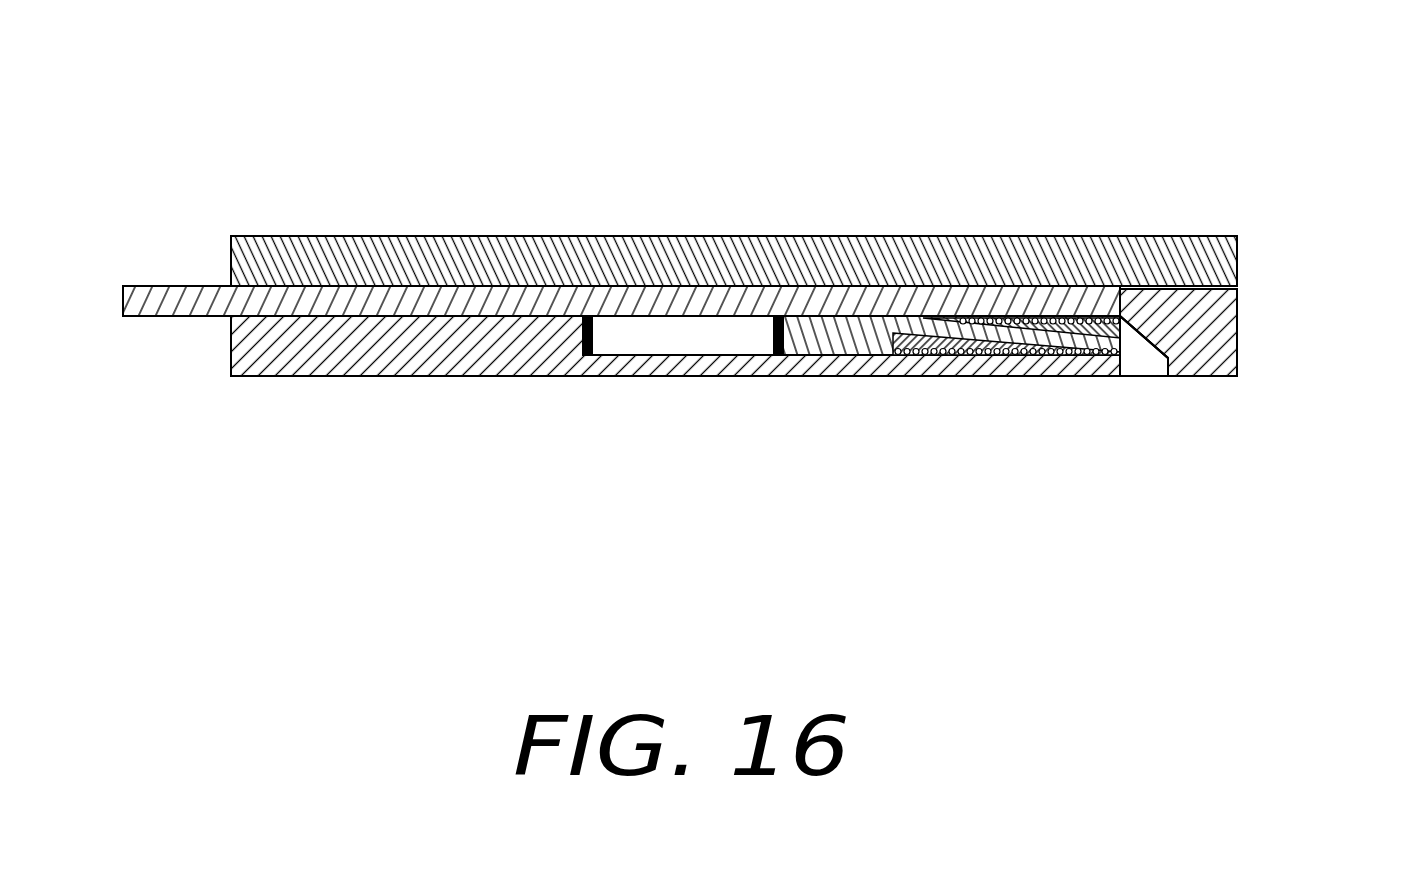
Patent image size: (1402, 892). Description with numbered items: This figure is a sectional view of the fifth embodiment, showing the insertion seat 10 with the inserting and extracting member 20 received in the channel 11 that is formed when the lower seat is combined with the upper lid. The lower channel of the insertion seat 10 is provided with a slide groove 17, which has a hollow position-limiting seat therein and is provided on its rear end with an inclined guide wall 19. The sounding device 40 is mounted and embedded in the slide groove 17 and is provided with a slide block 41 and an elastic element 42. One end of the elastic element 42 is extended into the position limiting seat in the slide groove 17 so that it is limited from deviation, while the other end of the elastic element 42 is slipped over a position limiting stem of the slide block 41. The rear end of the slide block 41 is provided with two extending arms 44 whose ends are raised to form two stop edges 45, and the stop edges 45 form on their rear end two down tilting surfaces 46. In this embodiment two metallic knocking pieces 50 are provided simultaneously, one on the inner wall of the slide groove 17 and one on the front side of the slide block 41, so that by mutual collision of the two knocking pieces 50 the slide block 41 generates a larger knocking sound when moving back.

The insertion seat 10 is at (810, 280).
The channel 11 is at (340, 318).
The slide groove 17 is at (682, 333).
The inclined guide wall 19 is at (1160, 343).
The inserting and extracting member 20 is at (160, 285).
The sounding device 40 is at (999, 354).
The slide block 41 is at (822, 337).
The elastic element 42 is at (957, 350).
The extending arms 44 is at (971, 318).
The stop edges 45 is at (1122, 345).
The down tilting surfaces 46 is at (1132, 335).
The metallic knocking piece 50 is at (597, 338).